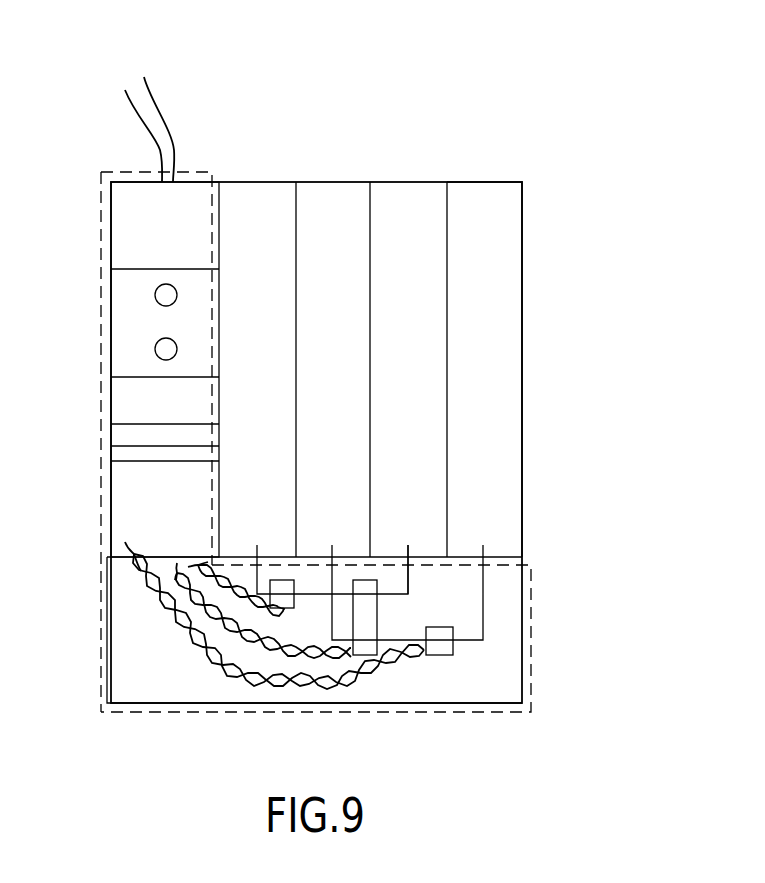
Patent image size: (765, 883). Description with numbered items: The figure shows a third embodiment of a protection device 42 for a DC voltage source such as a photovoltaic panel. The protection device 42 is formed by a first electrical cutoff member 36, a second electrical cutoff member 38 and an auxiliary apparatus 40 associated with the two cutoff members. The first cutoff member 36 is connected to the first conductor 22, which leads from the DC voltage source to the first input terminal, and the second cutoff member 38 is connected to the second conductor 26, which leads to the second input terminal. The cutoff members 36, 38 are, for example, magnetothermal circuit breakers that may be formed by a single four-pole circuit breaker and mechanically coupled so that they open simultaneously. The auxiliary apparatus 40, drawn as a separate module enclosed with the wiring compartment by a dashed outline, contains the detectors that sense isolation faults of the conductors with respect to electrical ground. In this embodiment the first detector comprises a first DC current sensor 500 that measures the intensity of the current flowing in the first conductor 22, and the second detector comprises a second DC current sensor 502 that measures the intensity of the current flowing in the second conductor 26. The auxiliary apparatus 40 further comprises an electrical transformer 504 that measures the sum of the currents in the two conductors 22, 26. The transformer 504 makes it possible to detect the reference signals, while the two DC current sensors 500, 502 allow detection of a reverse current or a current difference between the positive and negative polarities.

The protection device 42 is at (508, 124).
The auxiliary apparatus 40 is at (99, 293).
The first electrical cutoff member 36 is at (433, 289).
The second electrical cutoff member 38 is at (495, 326).
The first conductor 22 is at (408, 548).
The second conductor 26 is at (483, 595).
The first DC current sensor 500 is at (283, 580).
The electrical transformer 504 is at (365, 580).
The second DC current sensor 502 is at (447, 647).